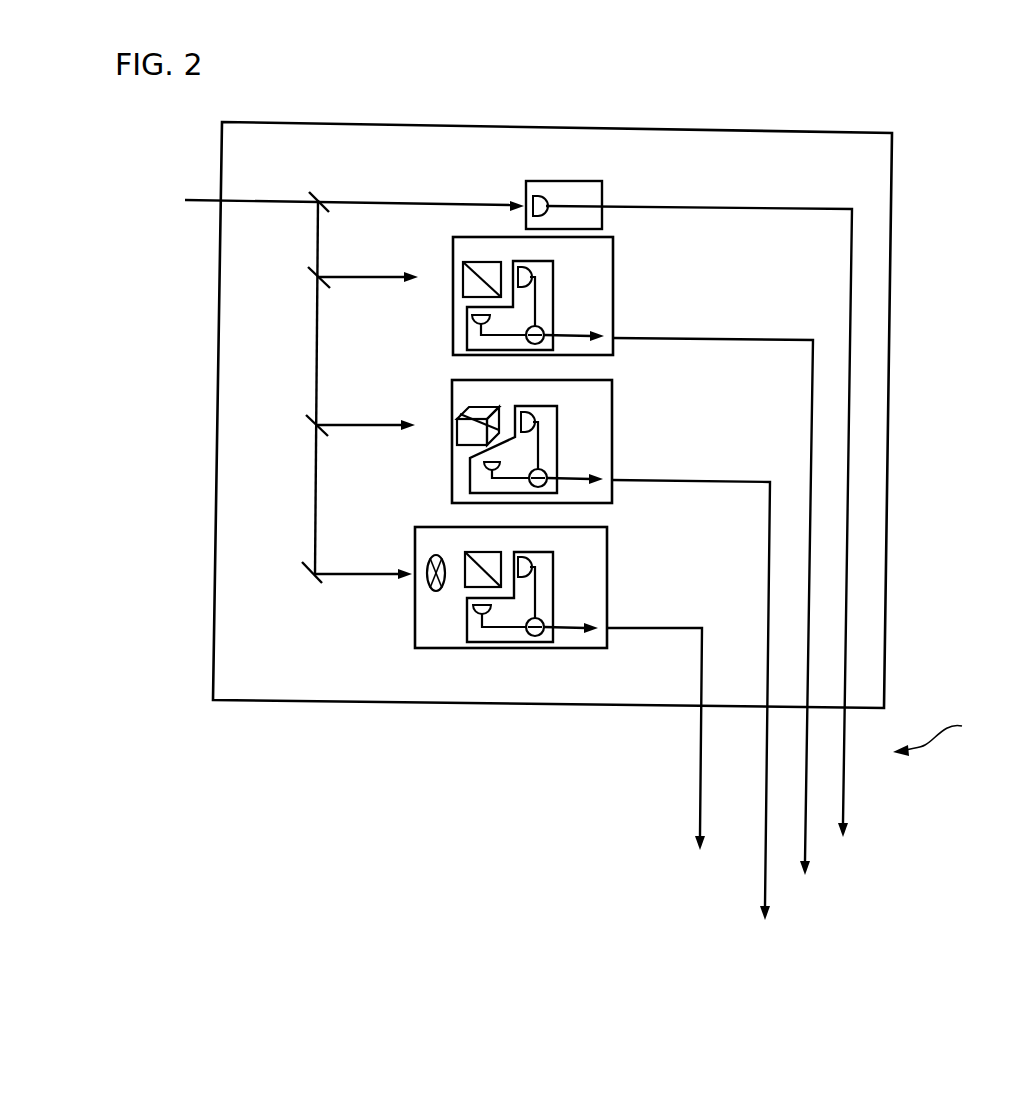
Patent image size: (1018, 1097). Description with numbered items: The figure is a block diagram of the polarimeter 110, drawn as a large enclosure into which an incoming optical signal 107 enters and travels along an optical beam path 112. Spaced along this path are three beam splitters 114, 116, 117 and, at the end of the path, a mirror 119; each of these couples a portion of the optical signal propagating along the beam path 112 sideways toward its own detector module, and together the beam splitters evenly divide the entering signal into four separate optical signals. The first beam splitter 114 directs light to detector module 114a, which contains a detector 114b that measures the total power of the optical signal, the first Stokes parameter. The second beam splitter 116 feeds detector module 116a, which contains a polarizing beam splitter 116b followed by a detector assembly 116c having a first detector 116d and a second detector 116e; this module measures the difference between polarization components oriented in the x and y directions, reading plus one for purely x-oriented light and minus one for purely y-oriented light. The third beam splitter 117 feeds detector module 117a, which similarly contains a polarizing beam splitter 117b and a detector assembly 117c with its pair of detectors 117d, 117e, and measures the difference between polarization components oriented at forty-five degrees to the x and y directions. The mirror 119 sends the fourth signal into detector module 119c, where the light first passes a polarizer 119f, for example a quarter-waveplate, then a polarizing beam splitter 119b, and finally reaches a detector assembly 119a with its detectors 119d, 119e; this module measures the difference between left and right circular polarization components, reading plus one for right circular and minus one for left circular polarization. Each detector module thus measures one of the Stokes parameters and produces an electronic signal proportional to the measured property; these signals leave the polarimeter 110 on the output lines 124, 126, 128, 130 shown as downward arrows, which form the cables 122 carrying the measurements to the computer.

The input light beam 107 is at (205, 198).
The polarimeter 110 is at (538, 127).
The optical beam path 112 is at (318, 243).
The beam splitter 114 is at (322, 200).
The detector module 114a is at (590, 181).
The detector 114b is at (537, 196).
The beam splitter 116 is at (322, 283).
The detector module 116a is at (613, 280).
The polarizing beam splitter 116b is at (463, 275).
The detector assembly 116c is at (553, 320).
The first detector 116d is at (515, 272).
The second detector 116e is at (480, 322).
The beam splitter 117 is at (320, 422).
The detector module 117a is at (612, 415).
The polarizing beam splitter 117b is at (458, 425).
The detector assembly 117c is at (557, 462).
The photodetector 117d is at (523, 415).
The photodetector 117e is at (488, 468).
The mirror 119 is at (318, 570).
The detector module 119a is at (553, 603).
The polarizing beam splitter 119b is at (470, 575).
The detector assembly 119c is at (607, 563).
The photodetector 119d is at (520, 560).
The photodetector 119e is at (465, 620).
The polarizer 119f is at (428, 580).
The cables 122 is at (949, 737).
The intensity signal output 124 is at (847, 800).
The first Stokes parameter output 126 is at (808, 857).
The second Stokes parameter output 128 is at (767, 895).
The third Stokes parameter output 130 is at (700, 767).